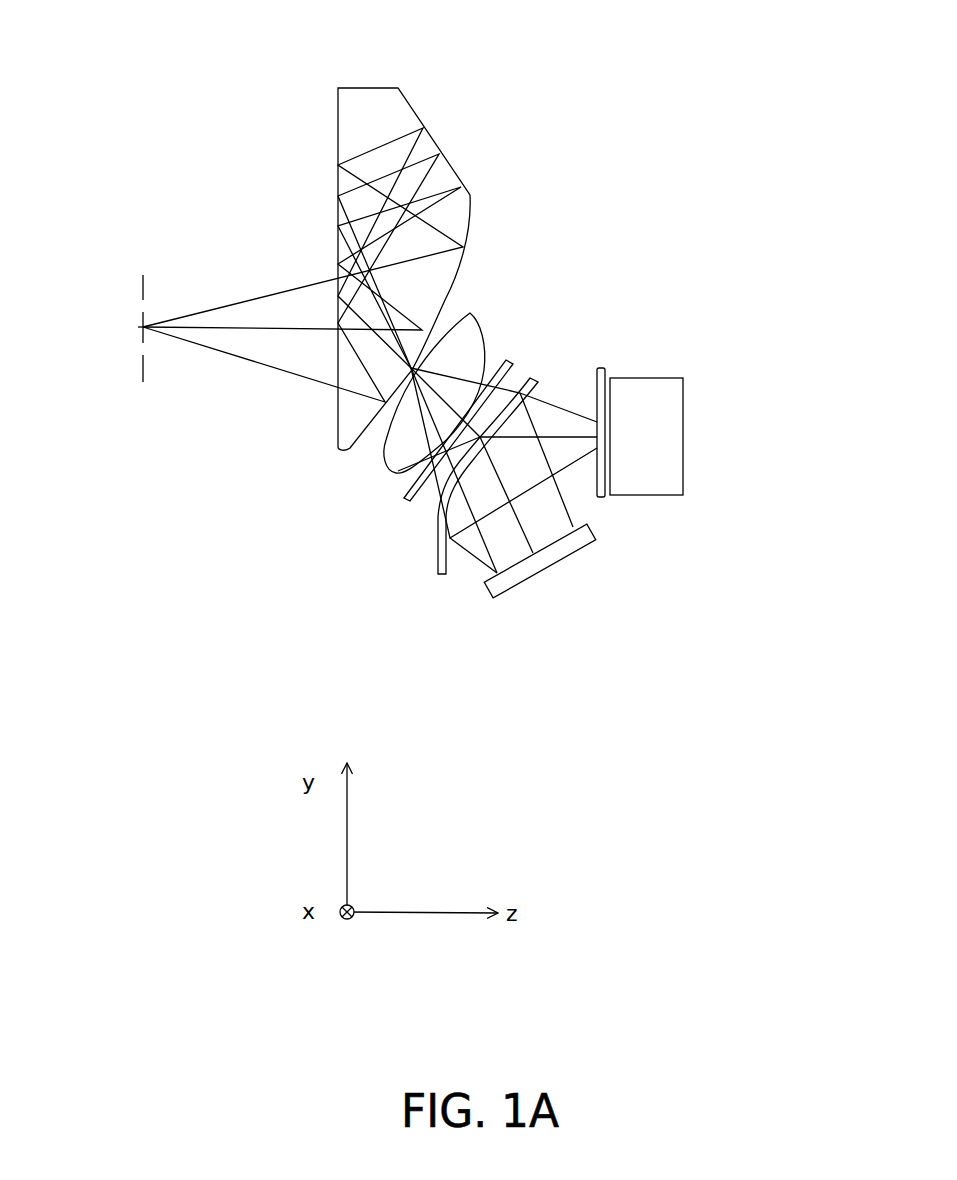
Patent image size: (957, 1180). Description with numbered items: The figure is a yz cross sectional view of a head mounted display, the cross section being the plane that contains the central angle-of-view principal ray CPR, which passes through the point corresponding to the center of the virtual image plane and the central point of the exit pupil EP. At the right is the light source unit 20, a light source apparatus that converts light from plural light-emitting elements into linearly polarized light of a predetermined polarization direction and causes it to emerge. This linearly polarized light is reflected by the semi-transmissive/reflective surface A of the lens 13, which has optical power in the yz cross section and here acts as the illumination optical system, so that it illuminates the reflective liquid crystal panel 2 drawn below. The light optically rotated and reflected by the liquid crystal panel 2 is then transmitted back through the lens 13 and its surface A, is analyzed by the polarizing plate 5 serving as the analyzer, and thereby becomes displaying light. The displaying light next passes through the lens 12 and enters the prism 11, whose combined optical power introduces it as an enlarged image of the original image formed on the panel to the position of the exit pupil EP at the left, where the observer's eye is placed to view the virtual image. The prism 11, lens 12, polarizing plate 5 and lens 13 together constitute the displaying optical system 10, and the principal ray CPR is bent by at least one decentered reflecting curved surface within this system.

The displaying optical system 10 is at (515, 168).
The prism 11 is at (352, 105).
The lens 12 is at (397, 470).
The polarizing plate 5 is at (406, 498).
The lens 13 is at (438, 574).
The light source unit 20 is at (685, 378).
The reflective liquid crystal panel 2 is at (515, 570).
The semi-transmissive/reflective surface A is at (452, 571).
The exit pupil EP is at (143, 290).
The central angle-of-view principal ray CPR is at (282, 337).